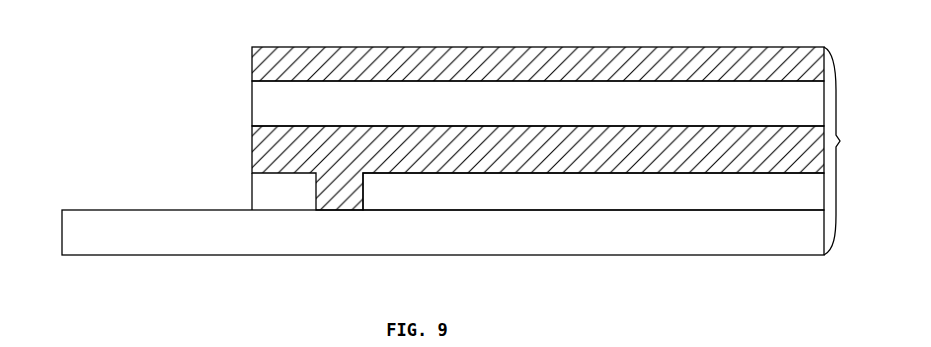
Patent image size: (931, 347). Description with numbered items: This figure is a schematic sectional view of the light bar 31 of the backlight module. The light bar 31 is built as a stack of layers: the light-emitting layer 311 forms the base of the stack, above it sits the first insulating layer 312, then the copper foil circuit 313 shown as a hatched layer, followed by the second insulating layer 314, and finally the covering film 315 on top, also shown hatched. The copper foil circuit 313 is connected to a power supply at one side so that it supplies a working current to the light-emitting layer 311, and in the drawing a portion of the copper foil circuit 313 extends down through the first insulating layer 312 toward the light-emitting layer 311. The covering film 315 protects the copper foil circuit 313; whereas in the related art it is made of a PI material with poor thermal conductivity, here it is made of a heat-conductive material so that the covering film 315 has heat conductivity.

The light bar 31 is at (841, 151).
The light-emitting layer 311 is at (443, 232).
The first insulating layer 312 is at (593, 191).
The copper foil circuit 313 is at (275, 151).
The second insulating layer 314 is at (538, 103).
The covering film 315 is at (275, 67).